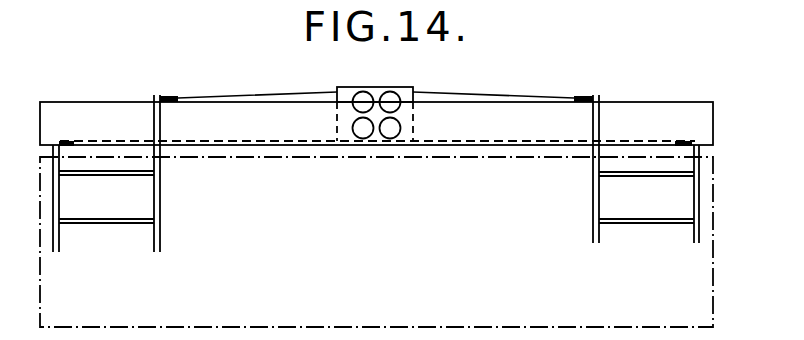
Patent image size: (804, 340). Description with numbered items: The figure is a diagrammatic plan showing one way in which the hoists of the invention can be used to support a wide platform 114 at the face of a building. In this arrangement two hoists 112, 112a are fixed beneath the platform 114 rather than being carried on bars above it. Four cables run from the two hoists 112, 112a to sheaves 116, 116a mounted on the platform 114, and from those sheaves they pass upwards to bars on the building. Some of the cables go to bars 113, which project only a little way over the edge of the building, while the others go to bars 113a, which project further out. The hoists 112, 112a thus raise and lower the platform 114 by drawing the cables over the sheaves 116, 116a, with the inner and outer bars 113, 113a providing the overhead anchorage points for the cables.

The hoist 112 is at (352, 95).
The hoist 112a is at (405, 95).
The bar 113 is at (57, 142).
The bar 113a is at (160, 124).
The platform 114 is at (475, 125).
The sheave 116 is at (70, 141).
The sheave 116a is at (168, 97).